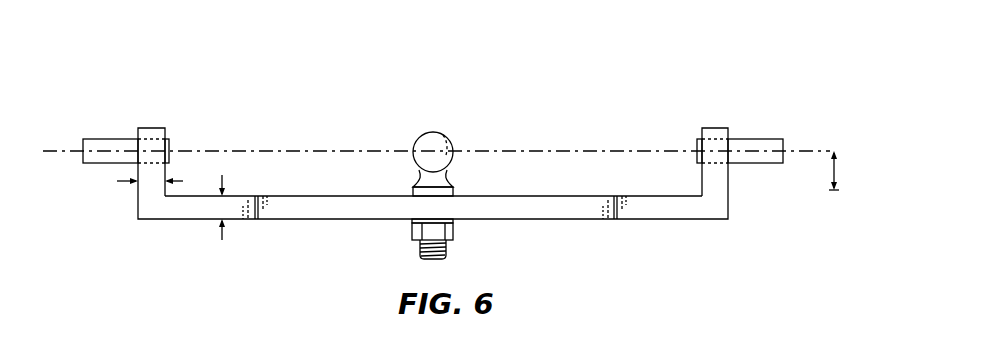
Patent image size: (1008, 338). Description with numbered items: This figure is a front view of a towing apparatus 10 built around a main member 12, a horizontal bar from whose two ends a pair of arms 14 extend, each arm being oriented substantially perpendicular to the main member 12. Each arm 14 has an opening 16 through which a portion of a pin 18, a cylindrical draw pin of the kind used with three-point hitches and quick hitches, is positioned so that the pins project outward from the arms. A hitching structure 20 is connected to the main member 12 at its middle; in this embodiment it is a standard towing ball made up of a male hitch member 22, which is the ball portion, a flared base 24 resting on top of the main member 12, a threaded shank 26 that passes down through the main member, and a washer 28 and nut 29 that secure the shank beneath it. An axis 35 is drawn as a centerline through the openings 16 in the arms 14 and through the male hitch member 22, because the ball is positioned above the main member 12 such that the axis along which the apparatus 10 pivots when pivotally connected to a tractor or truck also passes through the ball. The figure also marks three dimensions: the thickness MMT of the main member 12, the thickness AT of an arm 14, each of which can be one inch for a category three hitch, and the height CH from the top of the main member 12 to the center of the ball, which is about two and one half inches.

The towing apparatus 10 is at (562, 101).
The main member 12 is at (560, 212).
The arm 14 is at (150, 192).
The opening 16 is at (155, 138).
The pin 18 is at (111, 139).
The hitching structure 20 is at (426, 144).
The male hitch member 22 is at (428, 133).
The flared base 24 is at (418, 173).
The threaded shank 26 is at (420, 250).
The washer 28 is at (413, 222).
The nut 29 is at (453, 231).
The axis 35 is at (310, 150).
The arm thickness AT is at (133, 181).
The main member thickness MMT is at (216, 221).
The height CH is at (836, 170).